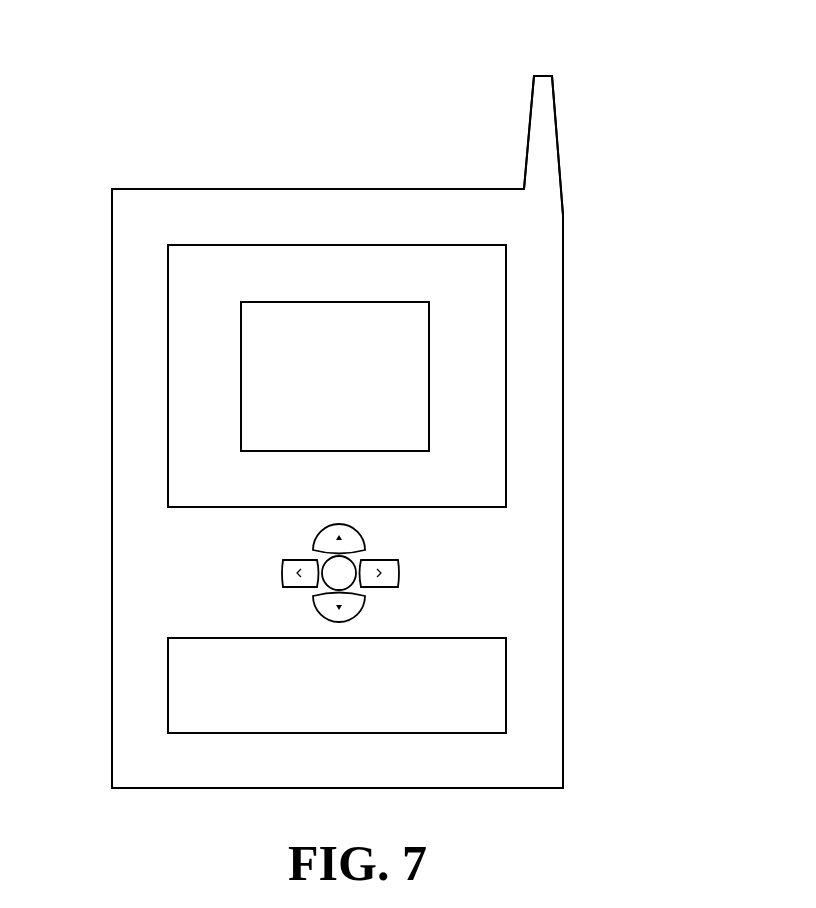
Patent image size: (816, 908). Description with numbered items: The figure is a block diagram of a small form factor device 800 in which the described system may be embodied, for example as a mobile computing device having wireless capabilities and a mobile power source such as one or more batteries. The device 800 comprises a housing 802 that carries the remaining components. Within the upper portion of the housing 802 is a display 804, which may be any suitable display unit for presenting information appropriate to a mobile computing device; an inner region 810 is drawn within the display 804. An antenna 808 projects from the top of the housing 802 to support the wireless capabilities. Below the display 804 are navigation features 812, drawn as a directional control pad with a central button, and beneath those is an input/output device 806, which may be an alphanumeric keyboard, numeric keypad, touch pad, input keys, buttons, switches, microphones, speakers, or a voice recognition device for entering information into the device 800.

The small form factor device 800 is at (120, 86).
The housing 802 is at (563, 489).
The display 804 is at (506, 264).
The input/output (I/O) device 806 is at (506, 677).
The antenna 808 is at (530, 124).
The display window / sub-region 810 is at (429, 394).
The navigation features 812 is at (418, 563).